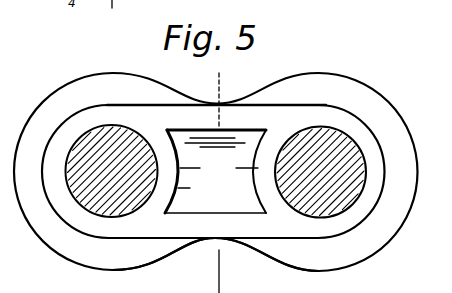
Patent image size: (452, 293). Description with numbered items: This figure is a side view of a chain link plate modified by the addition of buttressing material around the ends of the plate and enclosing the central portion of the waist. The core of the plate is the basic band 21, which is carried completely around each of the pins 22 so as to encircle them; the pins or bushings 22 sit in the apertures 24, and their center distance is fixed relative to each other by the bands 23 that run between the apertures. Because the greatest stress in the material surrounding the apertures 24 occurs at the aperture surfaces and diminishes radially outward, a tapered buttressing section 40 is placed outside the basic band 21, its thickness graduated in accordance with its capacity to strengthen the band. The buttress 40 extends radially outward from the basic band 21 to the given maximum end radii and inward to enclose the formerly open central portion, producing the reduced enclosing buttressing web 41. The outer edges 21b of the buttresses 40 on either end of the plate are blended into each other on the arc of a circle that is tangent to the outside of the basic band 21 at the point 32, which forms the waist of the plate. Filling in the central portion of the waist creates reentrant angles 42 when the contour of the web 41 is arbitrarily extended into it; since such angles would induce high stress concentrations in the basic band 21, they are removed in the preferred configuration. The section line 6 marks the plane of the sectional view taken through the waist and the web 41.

The section line 6- 6 is at (237, 83).
The basic band 21 is at (258, 124).
The outer edge of buttress 21b is at (360, 80).
The pin 22 is at (97, 137).
The band 23 is at (257, 186).
The aperture 24 is at (357, 193).
The tangent point 32 is at (220, 240).
The buttressing section 40 is at (366, 103).
The buttressing web 41 is at (216, 168).
The reentrant angle 42 is at (169, 212).